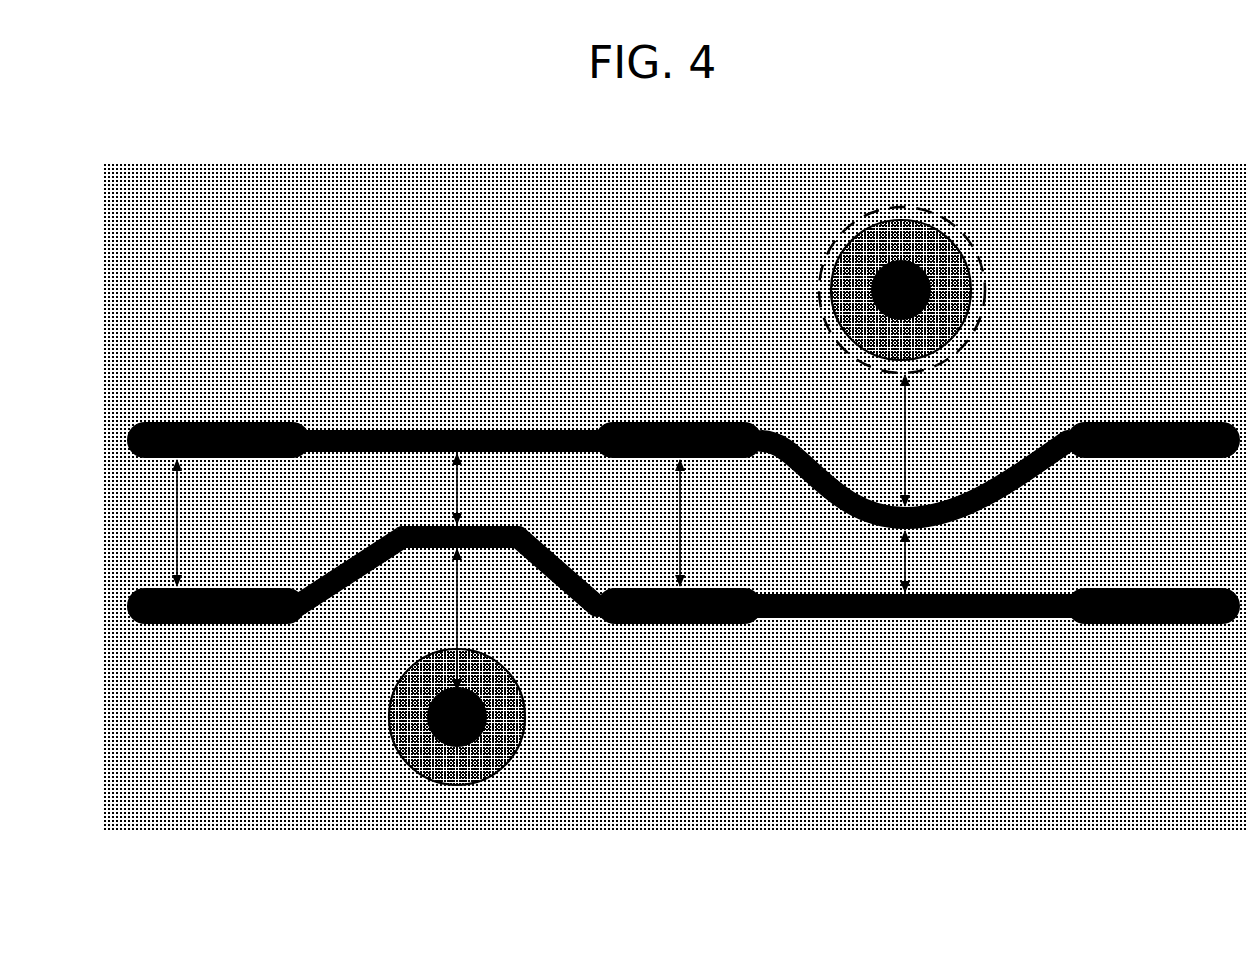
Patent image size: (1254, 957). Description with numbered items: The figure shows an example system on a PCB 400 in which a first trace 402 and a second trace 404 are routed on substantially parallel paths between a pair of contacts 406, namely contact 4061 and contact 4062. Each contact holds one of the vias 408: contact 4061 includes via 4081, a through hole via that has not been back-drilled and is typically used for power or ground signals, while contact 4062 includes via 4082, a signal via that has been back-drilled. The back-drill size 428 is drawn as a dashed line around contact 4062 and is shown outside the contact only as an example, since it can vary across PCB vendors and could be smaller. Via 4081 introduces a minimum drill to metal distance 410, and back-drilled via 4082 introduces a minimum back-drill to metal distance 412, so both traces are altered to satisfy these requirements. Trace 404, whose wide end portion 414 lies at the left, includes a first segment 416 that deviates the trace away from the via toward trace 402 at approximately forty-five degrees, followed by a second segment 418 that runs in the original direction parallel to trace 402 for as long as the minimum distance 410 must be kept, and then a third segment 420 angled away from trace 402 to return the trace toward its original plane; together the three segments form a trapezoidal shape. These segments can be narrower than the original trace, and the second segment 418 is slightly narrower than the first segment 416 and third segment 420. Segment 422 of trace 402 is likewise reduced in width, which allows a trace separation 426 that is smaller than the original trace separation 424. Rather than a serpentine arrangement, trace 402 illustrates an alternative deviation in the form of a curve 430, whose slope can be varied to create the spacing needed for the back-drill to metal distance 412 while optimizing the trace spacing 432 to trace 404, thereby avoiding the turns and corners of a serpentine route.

The PCB 400 is at (94, 160).
The first trace 402 is at (649, 438).
The second trace 404 is at (649, 581).
The contacts 406 is at (697, 502).
The contact 4061 is at (384, 716).
The contact 4062 is at (980, 292).
The vias 408 is at (679, 483).
The via 4081 is at (494, 720).
The via 4082 is at (866, 290).
The minimum drill to metal (D2M) distance 410 is at (479, 619).
The minimum back-drill to metal (BD2M) distance 412 is at (883, 440).
The trace pad 414 is at (230, 628).
The first segment 416 is at (326, 566).
The second segment 418 is at (428, 520).
The third segment 420 is at (579, 552).
The segment 422 is at (486, 422).
The original trace separation 424 is at (457, 523).
The trace separation 426 is at (482, 489).
The back-drill size 428 is at (820, 336).
The curve 430 is at (978, 486).
The trace spacing 432 is at (932, 561).